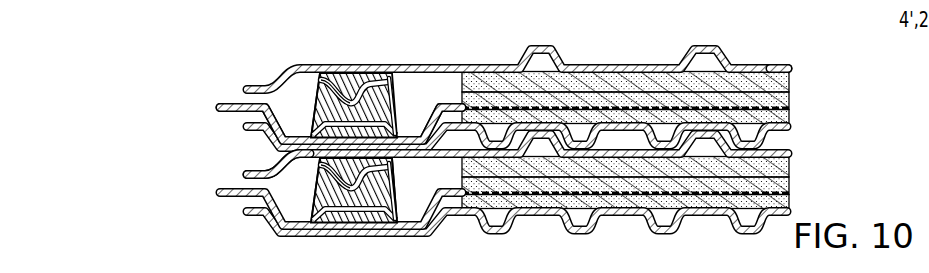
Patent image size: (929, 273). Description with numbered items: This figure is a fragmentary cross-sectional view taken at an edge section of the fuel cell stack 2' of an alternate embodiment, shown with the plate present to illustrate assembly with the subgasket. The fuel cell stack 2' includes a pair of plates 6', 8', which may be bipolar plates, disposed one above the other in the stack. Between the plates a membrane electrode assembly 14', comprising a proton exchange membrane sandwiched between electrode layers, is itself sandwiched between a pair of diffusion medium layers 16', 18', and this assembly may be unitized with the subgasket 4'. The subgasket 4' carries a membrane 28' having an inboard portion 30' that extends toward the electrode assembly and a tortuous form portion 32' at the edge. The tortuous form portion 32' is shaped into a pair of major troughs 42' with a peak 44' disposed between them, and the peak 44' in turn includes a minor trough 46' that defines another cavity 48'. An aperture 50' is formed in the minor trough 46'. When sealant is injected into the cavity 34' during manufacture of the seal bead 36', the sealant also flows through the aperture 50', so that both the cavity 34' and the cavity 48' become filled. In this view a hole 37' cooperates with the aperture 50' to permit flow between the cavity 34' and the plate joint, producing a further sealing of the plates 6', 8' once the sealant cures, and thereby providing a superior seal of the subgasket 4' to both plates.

The fuel cell stack 2' is at (517, 140).
The subgasket 4' is at (321, 129).
The membrane 28' is at (341, 167).
The plate 6' is at (780, 40).
The plate 8' is at (541, 180).
The membrane electrode assembly 14' is at (653, 141).
The diffusion medium layer 16' is at (652, 116).
The diffusion medium layer 18' is at (653, 159).
The inboard portion 30' is at (653, 110).
The tortuous form portion 32' is at (416, 119).
The cavity 34' is at (268, 160).
The seal bead 36' is at (300, 121).
The hole 37' is at (411, 188).
The major trough 42' is at (345, 85).
The peak 44' is at (361, 136).
The minor trough 46' is at (363, 120).
The cavity 48' is at (344, 104).
The aperture 50' is at (357, 136).